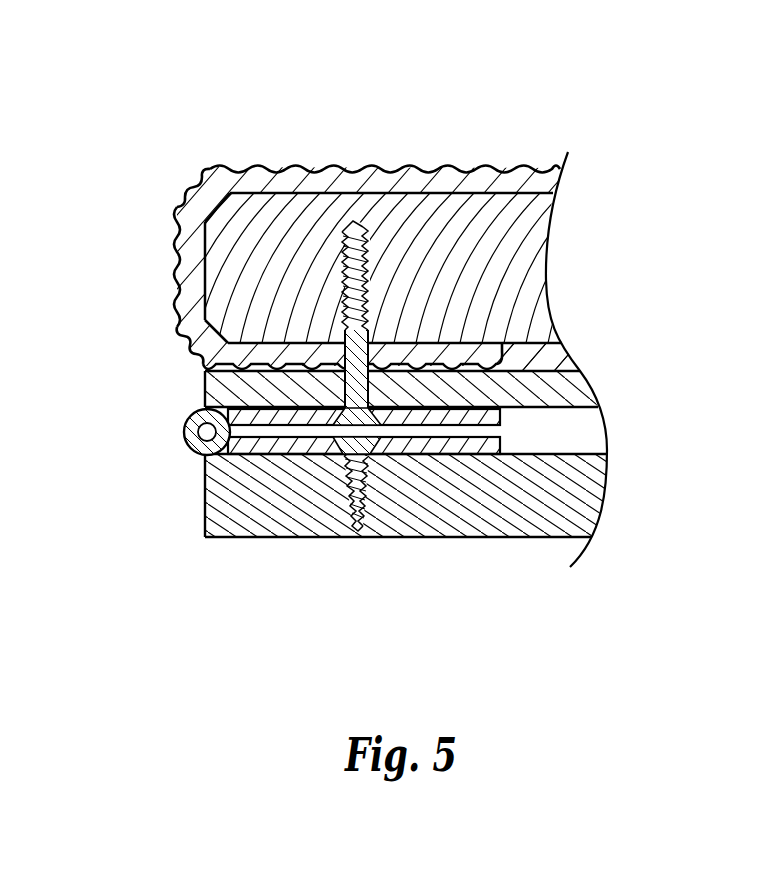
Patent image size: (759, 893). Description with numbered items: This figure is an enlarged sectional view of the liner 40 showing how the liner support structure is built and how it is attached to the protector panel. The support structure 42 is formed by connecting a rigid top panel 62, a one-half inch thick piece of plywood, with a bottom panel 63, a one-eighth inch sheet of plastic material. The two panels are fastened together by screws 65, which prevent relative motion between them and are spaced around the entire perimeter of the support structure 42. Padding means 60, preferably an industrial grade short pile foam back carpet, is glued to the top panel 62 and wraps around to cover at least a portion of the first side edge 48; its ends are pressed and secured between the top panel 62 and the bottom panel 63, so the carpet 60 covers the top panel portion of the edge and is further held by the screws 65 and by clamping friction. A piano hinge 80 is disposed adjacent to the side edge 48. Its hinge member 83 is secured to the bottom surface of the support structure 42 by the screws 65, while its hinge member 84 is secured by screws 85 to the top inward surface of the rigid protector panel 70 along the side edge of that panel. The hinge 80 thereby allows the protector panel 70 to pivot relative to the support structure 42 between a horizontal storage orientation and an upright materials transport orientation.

The liner 40 is at (150, 112).
The support structure 42 is at (610, 286).
The first side edge 48 is at (128, 258).
The padding means 60 is at (368, 180).
The rigid top panel 62 is at (423, 218).
The bottom panel 63 is at (557, 393).
The screws 65 is at (340, 312).
The protector panel 70 is at (483, 495).
The piano hinge 80 is at (150, 428).
The hinge member 83 is at (240, 385).
The hinge member 84 is at (270, 457).
The screws 85 is at (362, 445).